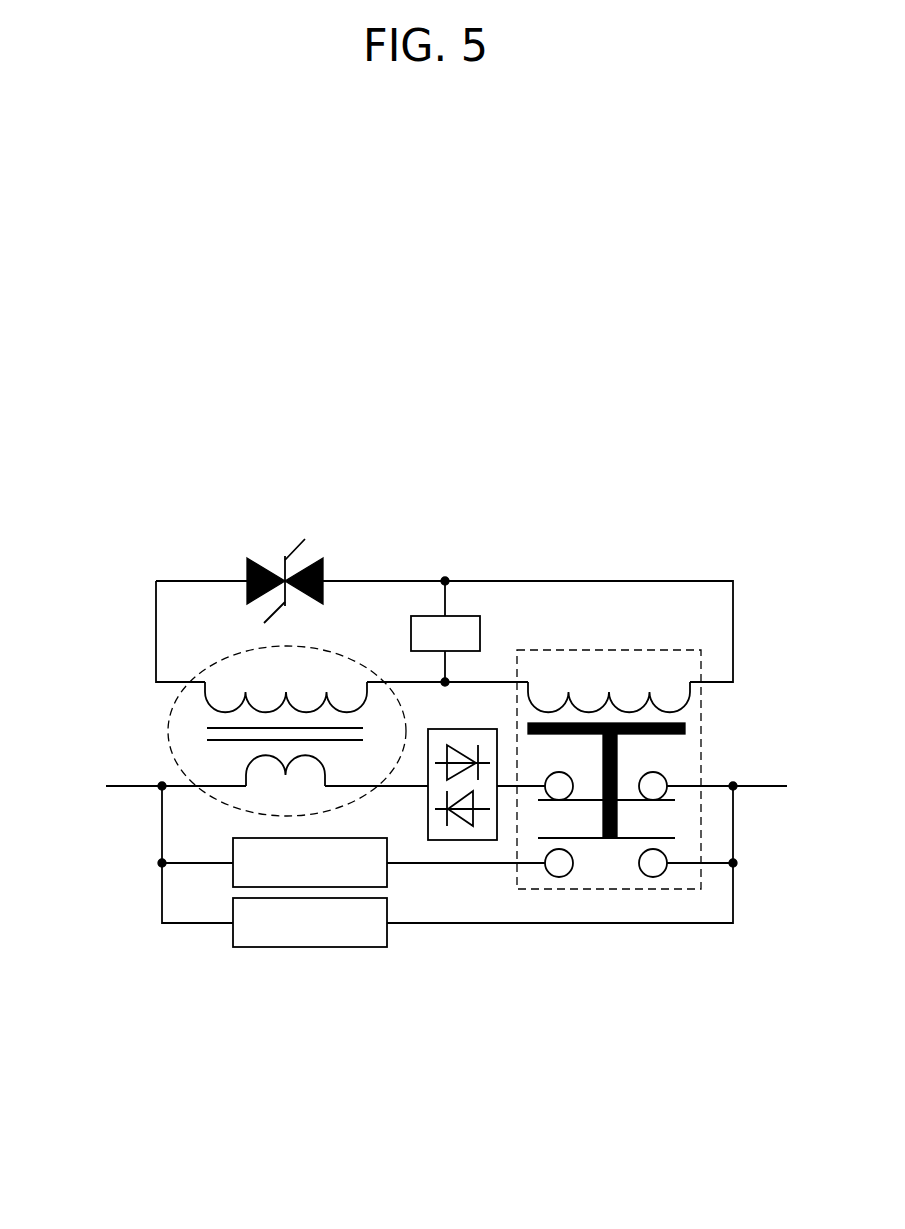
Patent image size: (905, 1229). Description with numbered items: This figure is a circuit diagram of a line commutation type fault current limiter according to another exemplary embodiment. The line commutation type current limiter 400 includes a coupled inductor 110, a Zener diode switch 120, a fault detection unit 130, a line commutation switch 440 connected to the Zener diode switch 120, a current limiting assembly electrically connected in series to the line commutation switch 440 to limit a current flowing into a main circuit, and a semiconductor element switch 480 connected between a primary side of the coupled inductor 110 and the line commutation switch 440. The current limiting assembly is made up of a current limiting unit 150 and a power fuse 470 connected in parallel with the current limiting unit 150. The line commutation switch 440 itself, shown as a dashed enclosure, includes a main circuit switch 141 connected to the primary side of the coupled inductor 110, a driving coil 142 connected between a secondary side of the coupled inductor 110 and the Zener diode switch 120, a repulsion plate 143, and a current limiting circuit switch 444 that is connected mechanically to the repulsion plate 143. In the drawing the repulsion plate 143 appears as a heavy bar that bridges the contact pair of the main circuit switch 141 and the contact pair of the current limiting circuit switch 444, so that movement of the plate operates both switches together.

The line commutation type current limiter 400 is at (221, 472).
The coupled inductor 110 is at (158, 713).
The Zener diode switch 120 is at (335, 558).
The fault detection unit 130 is at (478, 616).
The line commutation switch 440 is at (645, 650).
The driving coil 142 is at (609, 684).
The repulsion plate 143 is at (662, 735).
The main circuit switch 141 is at (606, 800).
The current limiting circuit switch 444 is at (606, 857).
The power fuse 470 is at (235, 874).
The current limiting unit 150 is at (337, 947).
The semiconductor element switch 480 is at (466, 850).